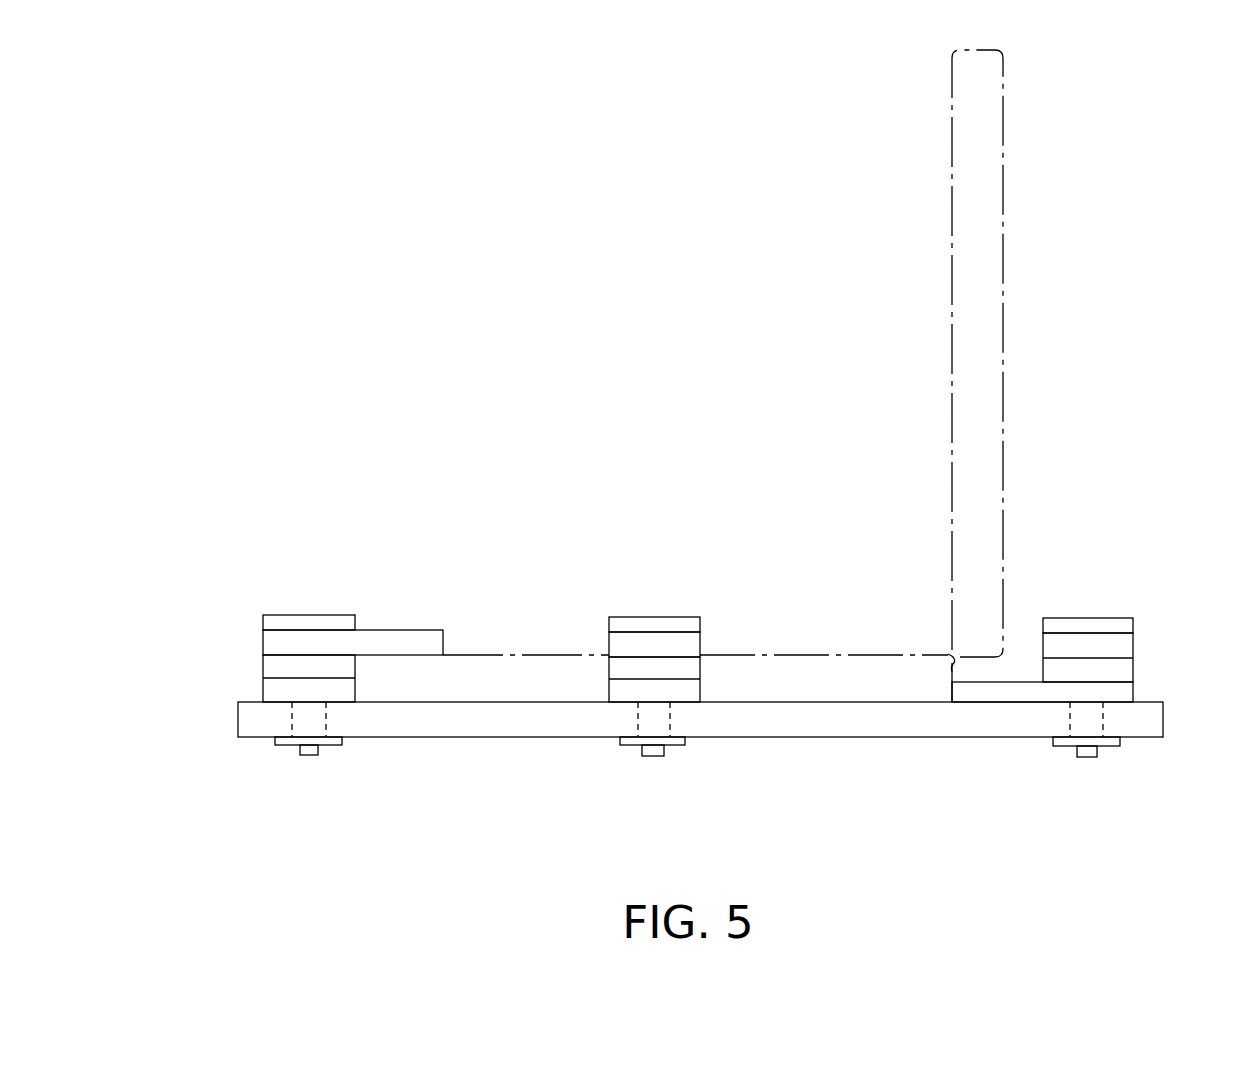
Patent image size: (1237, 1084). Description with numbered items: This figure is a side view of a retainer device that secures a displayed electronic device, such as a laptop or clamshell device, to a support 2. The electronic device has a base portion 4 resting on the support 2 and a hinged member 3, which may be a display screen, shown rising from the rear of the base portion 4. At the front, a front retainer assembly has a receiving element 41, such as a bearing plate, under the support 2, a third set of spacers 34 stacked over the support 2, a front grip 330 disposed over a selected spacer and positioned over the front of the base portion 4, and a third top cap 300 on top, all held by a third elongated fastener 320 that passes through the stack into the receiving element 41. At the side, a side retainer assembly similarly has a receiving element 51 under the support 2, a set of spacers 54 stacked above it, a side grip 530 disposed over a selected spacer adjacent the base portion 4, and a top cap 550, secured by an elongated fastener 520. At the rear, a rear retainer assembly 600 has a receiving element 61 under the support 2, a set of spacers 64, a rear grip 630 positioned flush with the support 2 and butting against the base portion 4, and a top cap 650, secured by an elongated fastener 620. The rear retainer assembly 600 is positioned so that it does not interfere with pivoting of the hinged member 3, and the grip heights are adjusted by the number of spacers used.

The support 2 is at (418, 738).
The hinged member 3 is at (955, 168).
The base portion 4 is at (785, 688).
The third top cap 300 is at (263, 621).
The front grip 330 is at (263, 647).
The third set of spacers 34 is at (257, 655).
The receiving element 41 is at (283, 745).
The third elongated fastener 320 is at (312, 756).
The top cap 550 is at (609, 622).
The side grip 530 is at (609, 646).
The set of spacers 54 is at (603, 658).
The receiving element 51 is at (627, 745).
The elongated fastener 520 is at (657, 757).
The rear retainer assembly 600 is at (1078, 588).
The top cap 650 is at (1133, 627).
The set of spacers 64 is at (1140, 682).
The rear grip 630 is at (1136, 697).
The receiving element 61 is at (1060, 747).
The elongated fastener 620 is at (1090, 758).